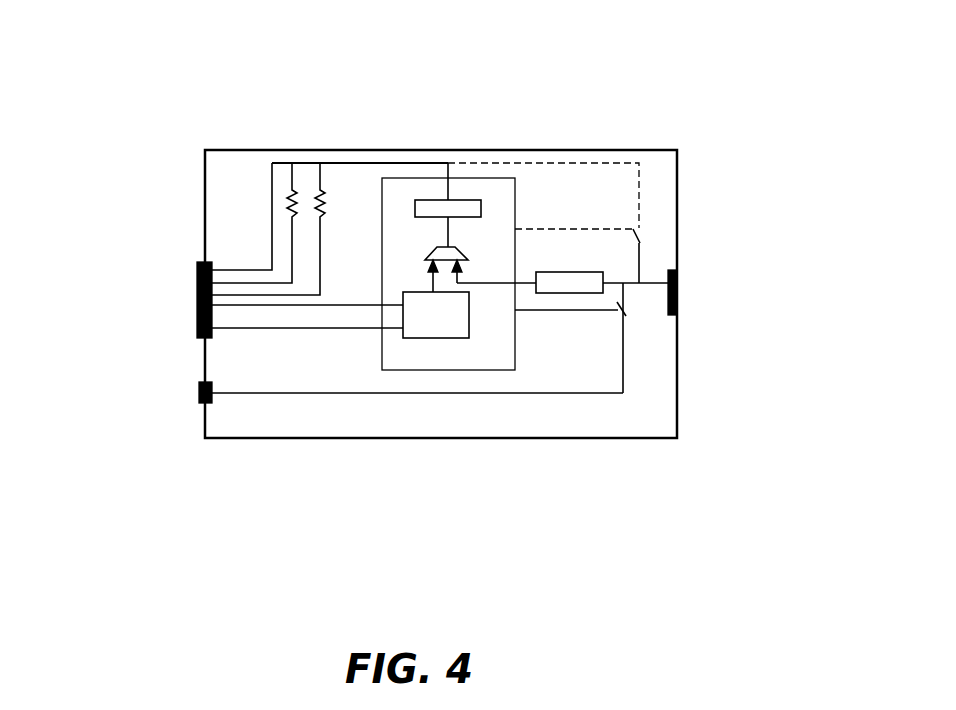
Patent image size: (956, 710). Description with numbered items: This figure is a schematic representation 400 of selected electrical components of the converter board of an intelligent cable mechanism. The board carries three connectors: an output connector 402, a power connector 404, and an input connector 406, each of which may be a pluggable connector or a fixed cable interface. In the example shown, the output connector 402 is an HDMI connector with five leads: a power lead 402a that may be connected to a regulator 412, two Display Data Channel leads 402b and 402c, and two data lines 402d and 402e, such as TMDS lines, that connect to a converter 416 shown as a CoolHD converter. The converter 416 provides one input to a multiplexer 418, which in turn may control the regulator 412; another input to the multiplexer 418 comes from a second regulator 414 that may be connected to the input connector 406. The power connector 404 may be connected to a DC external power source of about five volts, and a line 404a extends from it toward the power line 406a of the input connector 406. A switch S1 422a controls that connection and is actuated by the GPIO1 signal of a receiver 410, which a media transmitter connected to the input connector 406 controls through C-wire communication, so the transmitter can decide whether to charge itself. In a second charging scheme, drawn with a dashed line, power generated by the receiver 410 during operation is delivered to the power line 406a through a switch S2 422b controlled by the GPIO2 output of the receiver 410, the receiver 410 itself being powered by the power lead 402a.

The schematic representation 400 is at (708, 103).
The output connector 402 is at (197, 283).
The power lead 402a is at (225, 270).
The Display Data Channel lead 402b is at (233, 283).
The Display Data Channel lead 402c is at (258, 305).
The data line 402d is at (307, 305).
The data line 402e is at (332, 305).
The power connector 404 is at (197, 396).
The line 404a is at (597, 393).
The input connector 406 is at (680, 303).
The power line 406a is at (647, 283).
The receiver 410 is at (435, 370).
The regulator 412 is at (421, 197).
The regulator 414 is at (578, 268).
The converter 416 is at (462, 335).
The multiplexer 418 is at (437, 250).
The switch S1 422a is at (637, 317).
The switch S2 422b is at (660, 233).